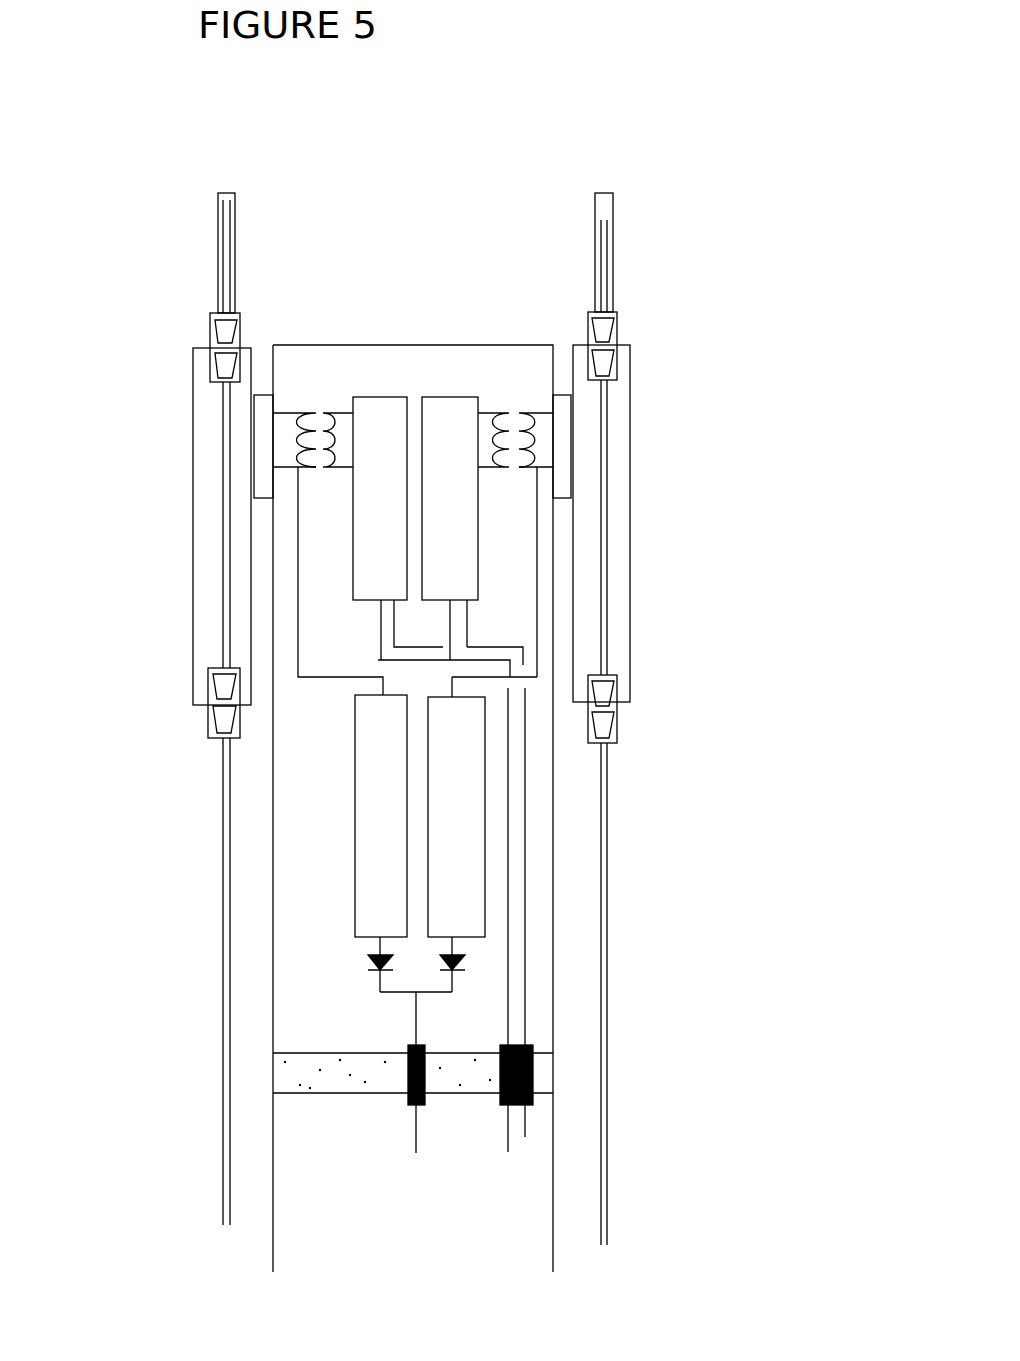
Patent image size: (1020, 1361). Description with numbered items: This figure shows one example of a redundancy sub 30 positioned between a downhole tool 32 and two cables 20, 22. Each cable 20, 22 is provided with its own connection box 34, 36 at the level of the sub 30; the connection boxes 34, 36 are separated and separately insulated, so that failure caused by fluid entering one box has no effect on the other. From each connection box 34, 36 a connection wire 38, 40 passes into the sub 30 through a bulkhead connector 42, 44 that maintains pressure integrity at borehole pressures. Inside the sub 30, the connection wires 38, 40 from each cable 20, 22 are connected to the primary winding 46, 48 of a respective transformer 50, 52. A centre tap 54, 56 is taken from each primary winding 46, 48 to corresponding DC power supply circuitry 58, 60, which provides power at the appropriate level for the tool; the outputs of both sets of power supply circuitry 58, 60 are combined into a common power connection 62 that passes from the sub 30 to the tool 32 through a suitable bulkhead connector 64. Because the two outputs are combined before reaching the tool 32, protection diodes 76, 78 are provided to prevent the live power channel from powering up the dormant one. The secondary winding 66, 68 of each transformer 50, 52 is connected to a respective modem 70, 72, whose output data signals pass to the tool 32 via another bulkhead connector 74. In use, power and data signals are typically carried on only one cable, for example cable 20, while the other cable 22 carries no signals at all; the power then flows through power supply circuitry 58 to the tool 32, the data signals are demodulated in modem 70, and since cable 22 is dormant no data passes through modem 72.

The cable 20 is at (243, 253).
The cable 22 is at (624, 270).
The sub 30 is at (431, 312).
The downhole tool 32 is at (413, 1188).
The connection box 34 is at (191, 424).
The connection box 36 is at (645, 470).
The connection wire 38 is at (236, 408).
The connection wire 40 is at (596, 409).
The bulkhead connector 42 is at (251, 434).
The bulkhead connector 44 is at (578, 442).
The primary winding 46 is at (301, 410).
The primary winding 48 is at (534, 407).
The transformer 50 is at (310, 477).
The transformer 52 is at (516, 485).
The centre tap 54 is at (294, 448).
The centre tap 56 is at (551, 452).
The DC power supply circuitry 58 is at (363, 777).
The DC power supply circuitry 60 is at (466, 773).
The common power connection 62 is at (391, 1070).
The bulkhead connector 64 is at (566, 1058).
The secondary winding 66 is at (335, 396).
The secondary winding 68 is at (498, 396).
The modem 70 is at (369, 513).
The modem 72 is at (478, 542).
The bulkhead connector 74 is at (535, 1097).
The diode 76 is at (361, 963).
The diode 78 is at (477, 965).